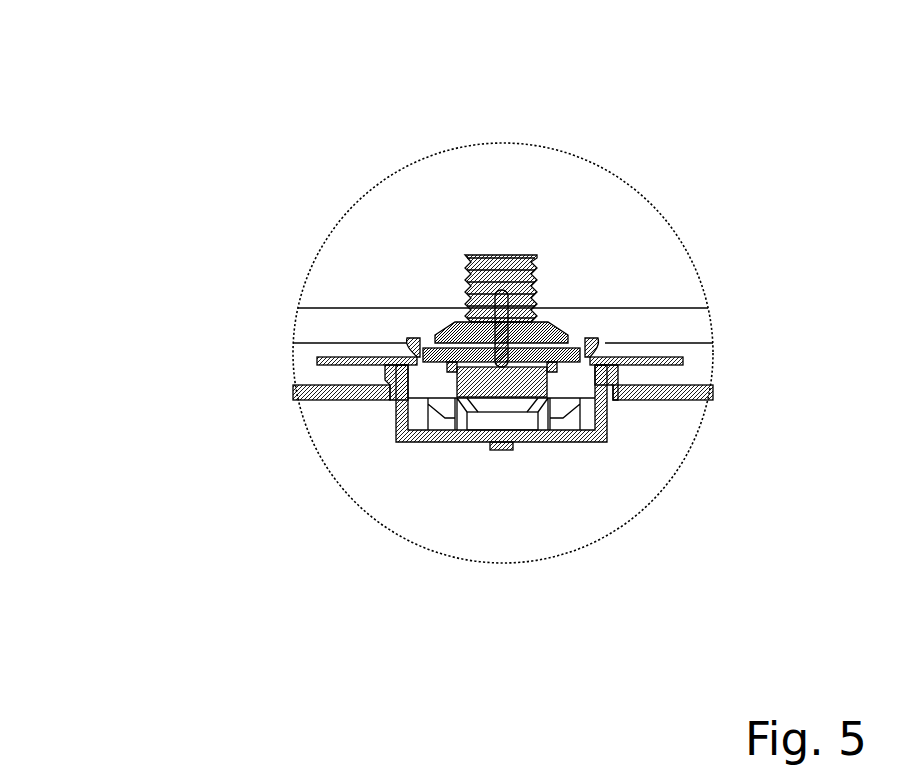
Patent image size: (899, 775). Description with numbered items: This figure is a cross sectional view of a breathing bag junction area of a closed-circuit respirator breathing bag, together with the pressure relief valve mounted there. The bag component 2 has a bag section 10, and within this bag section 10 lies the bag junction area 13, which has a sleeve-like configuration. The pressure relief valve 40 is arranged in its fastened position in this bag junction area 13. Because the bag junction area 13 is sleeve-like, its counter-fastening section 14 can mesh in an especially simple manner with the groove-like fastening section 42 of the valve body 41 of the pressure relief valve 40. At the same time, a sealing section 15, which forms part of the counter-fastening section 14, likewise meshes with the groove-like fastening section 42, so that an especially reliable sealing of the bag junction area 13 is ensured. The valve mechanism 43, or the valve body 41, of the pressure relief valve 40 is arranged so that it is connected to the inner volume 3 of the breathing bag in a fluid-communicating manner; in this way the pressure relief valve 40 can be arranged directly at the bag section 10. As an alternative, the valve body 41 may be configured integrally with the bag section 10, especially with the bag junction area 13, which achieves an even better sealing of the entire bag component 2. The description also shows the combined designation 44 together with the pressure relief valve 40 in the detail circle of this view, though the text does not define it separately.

The bag component 2 is at (376, 454).
The bag section 10 is at (514, 454).
The bag junction area 13 is at (675, 483).
The inner volume 3 is at (480, 541).
The pressure relief valve 40 is at (503, 291).
The pressure relief valve 44 is at (518, 140).
The valve body 41 is at (420, 335).
The counter-fastening section 14 is at (567, 333).
The sealing section 15 is at (502, 379).
The fastening section 42 is at (412, 395).
The valve mechanism 43 is at (520, 447).